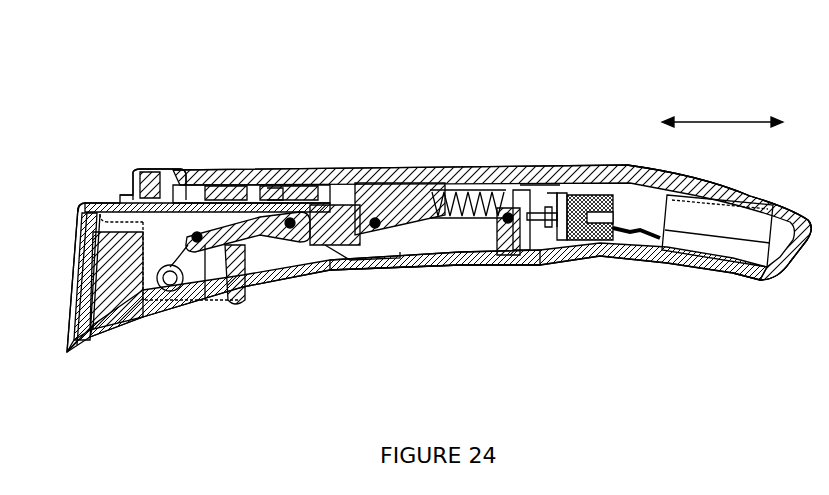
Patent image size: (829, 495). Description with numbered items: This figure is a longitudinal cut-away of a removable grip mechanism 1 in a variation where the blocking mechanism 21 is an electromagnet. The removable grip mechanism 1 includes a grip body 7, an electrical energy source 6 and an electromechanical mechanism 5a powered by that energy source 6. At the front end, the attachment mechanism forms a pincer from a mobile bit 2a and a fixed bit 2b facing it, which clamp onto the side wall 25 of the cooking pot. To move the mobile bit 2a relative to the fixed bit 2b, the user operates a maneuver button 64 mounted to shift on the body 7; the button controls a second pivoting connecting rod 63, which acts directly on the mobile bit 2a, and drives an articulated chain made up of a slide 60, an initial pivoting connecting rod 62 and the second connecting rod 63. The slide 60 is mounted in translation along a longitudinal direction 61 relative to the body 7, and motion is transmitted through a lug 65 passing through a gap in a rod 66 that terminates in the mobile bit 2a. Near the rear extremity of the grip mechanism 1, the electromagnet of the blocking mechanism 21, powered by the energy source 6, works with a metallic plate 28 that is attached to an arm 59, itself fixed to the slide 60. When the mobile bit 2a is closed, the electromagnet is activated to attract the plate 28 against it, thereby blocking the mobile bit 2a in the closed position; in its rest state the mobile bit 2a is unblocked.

The removable grip mechanism 1 is at (222, 132).
The mobile bit 2a is at (70, 257).
The fixed bit 2b is at (87, 337).
The side wall 25 is at (68, 357).
The rod 66 is at (172, 186).
The lug 65 is at (323, 205).
The slide 60 is at (403, 205).
The arm 59 is at (536, 200).
The blocking mechanism 21 is at (538, 140).
The metallic plate 28 is at (568, 205).
The longitudinal direction 61 is at (715, 122).
The second pivoting connecting rod 63 is at (207, 247).
The initial pivoting connecting rod 62 is at (337, 237).
The maneuver button 64 is at (407, 265).
The electromechanical mechanism 5a is at (573, 238).
The electrical energy source 6 is at (680, 247).
The grip body 7 is at (733, 268).